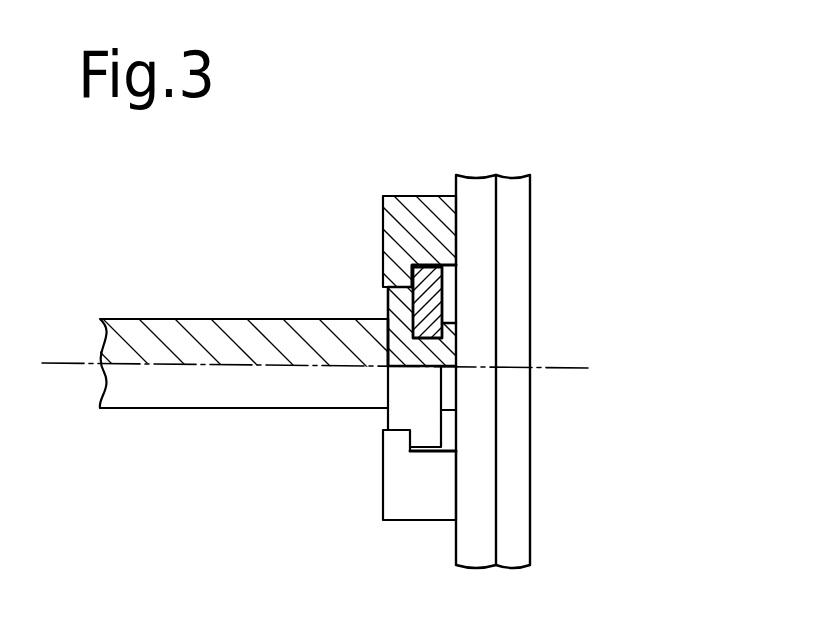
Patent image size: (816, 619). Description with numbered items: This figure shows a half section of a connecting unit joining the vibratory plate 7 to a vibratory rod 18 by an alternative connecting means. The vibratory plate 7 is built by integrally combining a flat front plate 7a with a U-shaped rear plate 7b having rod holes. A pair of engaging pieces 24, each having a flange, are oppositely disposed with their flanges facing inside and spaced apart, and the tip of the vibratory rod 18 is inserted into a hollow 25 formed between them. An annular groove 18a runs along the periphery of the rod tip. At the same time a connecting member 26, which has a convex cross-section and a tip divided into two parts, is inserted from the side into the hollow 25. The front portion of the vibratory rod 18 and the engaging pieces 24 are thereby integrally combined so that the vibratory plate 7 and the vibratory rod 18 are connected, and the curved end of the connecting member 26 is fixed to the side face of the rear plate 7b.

The vibratory plate 7 is at (529, 317).
The front plate 7a is at (513, 190).
The rear plate 7b is at (478, 190).
The vibratory rod 18 is at (201, 331).
The annular groove 18a is at (368, 340).
The engaging piece 24 is at (420, 208).
The hollow 25 is at (448, 300).
The connecting member 26 is at (388, 302).